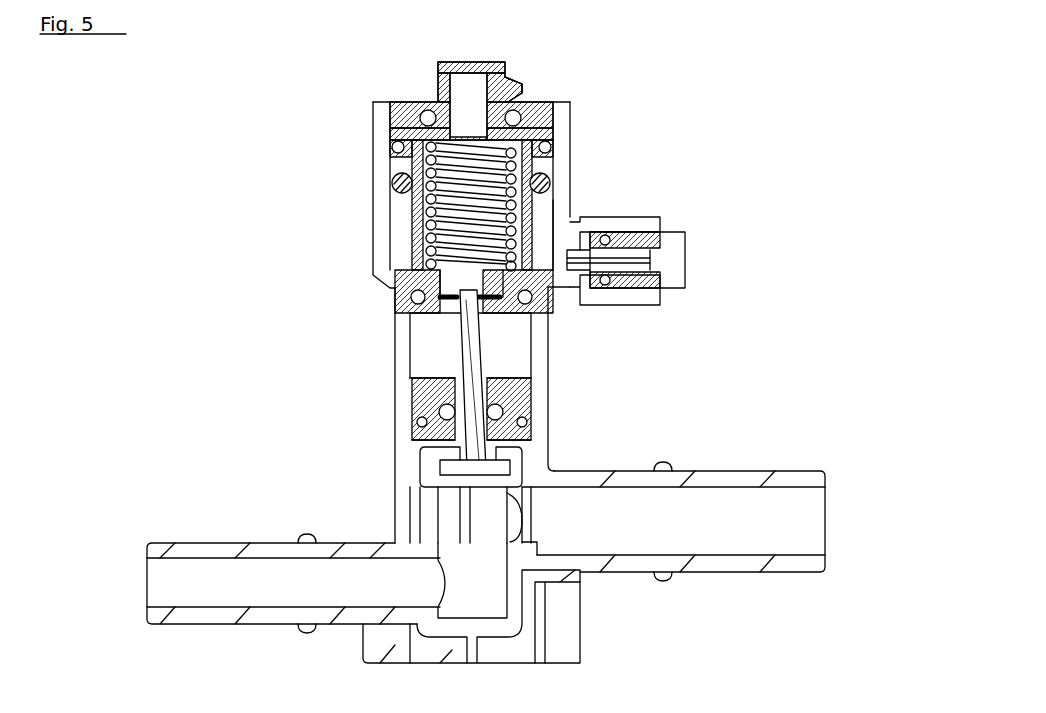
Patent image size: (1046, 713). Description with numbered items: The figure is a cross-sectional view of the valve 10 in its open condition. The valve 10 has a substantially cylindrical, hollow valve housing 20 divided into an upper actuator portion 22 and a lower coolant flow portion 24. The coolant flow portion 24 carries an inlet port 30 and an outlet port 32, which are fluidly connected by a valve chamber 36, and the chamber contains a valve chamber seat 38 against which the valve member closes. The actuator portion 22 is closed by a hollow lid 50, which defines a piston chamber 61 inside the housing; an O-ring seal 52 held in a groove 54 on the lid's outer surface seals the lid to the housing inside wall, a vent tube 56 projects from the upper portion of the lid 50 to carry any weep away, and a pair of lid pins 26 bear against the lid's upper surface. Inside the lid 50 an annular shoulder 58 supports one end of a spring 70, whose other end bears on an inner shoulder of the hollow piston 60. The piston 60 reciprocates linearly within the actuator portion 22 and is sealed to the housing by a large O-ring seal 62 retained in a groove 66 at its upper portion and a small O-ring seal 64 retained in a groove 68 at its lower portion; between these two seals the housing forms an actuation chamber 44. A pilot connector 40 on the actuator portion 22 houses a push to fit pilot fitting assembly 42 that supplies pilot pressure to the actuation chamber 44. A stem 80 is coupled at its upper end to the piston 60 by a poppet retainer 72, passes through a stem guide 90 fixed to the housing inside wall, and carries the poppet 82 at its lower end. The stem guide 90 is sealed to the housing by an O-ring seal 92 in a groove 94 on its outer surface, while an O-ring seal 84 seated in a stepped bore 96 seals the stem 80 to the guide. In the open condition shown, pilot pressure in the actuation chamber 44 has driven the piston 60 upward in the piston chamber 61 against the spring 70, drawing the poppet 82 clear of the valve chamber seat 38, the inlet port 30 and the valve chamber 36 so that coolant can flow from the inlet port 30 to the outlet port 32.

The valve 10 is at (97, 127).
The valve housing 20 is at (395, 307).
The actuator portion 22 is at (374, 170).
The coolant flow portion 24 is at (397, 510).
The lid pins 26 is at (513, 110).
The inlet port 30 is at (828, 522).
The outlet port 32 is at (148, 582).
The valve chamber 36 is at (483, 523).
The valve chamber seat 38 is at (523, 540).
The pilot connector 40 is at (613, 232).
The pilot fitting assembly 42 is at (688, 262).
The actuation chamber 44 is at (527, 242).
The lid 50 is at (483, 73).
The O-ring seal 52 is at (548, 160).
The groove 54 is at (563, 130).
The vent tube 56 is at (508, 92).
The annular shoulder 58 is at (404, 133).
The piston 60 is at (585, 222).
The piston chamber 61 is at (402, 232).
The large O-ring seal 62 is at (537, 222).
The small O-ring seal 64 is at (530, 302).
The groove 66 is at (551, 190).
The groove 68 is at (553, 288).
The spring 70 is at (392, 183).
The poppet retainer 72 is at (448, 299).
The stem 80 is at (455, 350).
The poppet 82 is at (428, 476).
The O-ring seal 84 is at (520, 408).
The stem guide 90 is at (420, 395).
The O-ring seal 92 is at (440, 418).
The groove 94 is at (548, 420).
The stepped bore 96 is at (436, 413).